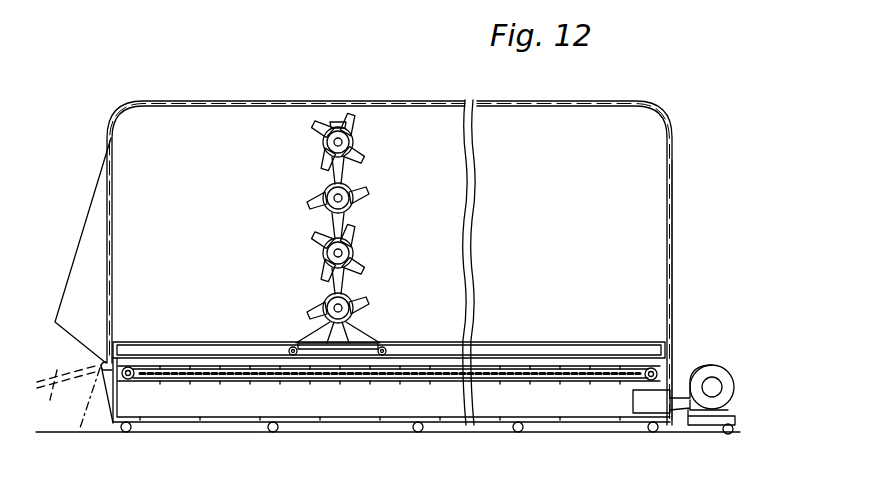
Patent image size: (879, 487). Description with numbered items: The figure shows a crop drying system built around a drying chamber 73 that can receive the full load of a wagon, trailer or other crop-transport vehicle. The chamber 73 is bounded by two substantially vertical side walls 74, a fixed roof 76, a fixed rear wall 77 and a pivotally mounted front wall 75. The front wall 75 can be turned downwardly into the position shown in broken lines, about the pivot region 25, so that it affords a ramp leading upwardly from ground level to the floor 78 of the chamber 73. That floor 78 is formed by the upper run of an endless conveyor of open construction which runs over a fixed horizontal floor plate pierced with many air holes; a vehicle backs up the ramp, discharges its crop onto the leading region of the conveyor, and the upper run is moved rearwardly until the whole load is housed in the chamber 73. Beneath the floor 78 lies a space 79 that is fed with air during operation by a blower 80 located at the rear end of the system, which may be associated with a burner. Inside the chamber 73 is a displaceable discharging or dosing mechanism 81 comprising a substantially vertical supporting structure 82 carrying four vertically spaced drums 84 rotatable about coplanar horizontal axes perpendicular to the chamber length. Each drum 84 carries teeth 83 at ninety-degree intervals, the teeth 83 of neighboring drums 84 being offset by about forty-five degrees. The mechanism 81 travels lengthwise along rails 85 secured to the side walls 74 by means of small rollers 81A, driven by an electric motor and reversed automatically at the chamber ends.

The hinge pivot axis 25 is at (68, 387).
The drying chamber 73 is at (535, 226).
The side walls 74 is at (588, 118).
The front wall 75 is at (88, 238).
The roof 76 is at (441, 91).
The rear wall 77 is at (668, 184).
The floor 78 is at (248, 382).
The space 79 is at (405, 408).
The blower 80 is at (712, 366).
The discharging or dosing mechanism 81 is at (352, 233).
The rollers 81A is at (385, 344).
The supporting structure 82 is at (326, 278).
The teeth 83 is at (318, 193).
The drums 84 is at (358, 144).
The rails 85 is at (188, 327).